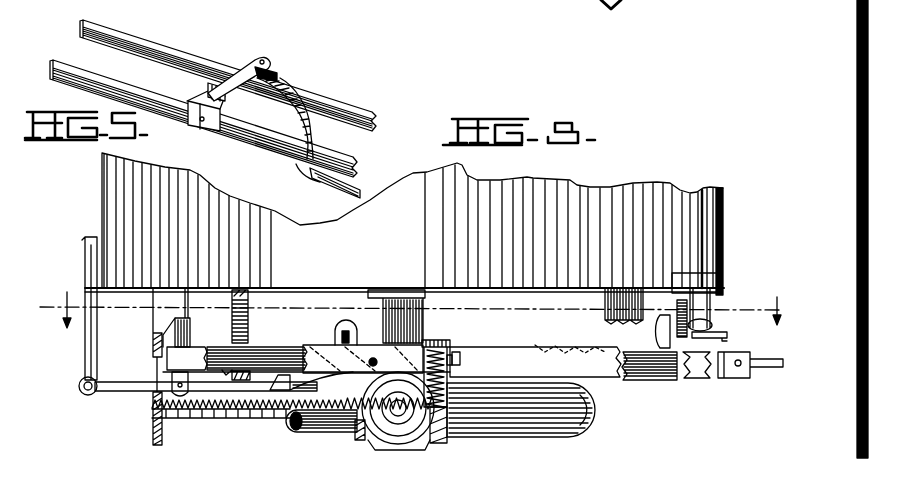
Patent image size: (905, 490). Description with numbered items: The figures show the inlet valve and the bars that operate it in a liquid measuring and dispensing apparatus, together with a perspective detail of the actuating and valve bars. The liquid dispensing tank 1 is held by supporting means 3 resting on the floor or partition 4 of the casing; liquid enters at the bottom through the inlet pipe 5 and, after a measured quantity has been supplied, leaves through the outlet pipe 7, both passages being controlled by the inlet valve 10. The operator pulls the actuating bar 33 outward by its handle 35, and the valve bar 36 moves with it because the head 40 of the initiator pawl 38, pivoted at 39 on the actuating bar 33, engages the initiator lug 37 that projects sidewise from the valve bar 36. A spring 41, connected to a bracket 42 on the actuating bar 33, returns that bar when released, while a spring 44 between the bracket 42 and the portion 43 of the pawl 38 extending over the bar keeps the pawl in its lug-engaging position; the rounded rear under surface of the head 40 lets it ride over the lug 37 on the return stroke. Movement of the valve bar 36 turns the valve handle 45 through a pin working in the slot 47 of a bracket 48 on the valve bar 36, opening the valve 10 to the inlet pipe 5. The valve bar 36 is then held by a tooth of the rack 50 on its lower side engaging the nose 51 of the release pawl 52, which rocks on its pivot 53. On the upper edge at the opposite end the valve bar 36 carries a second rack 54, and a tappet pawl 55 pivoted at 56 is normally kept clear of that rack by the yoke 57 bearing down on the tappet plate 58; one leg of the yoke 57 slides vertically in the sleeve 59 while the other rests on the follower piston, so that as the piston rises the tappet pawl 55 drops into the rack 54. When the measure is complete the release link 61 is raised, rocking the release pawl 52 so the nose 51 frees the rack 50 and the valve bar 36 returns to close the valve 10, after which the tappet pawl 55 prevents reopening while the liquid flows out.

In FIG. 3, the liquid dispensing tank 1 is at (608, 195).
In FIG. 3, the supporting means 3 is at (153, 320).
In FIG. 3, the floor or partition 4 is at (409, 309).
In FIG. 3, the inlet pipe 5 is at (318, 433).
In FIG. 3, the outlet pipe 7 is at (512, 437).
In FIG. 3, the inlet valve 10 is at (404, 446).
In FIG. 5, the actuating bar 33 is at (128, 38).
In FIG. 3, the actuating bar 33 is at (698, 380).
In FIG. 3, the handle 35 is at (768, 370).
In FIG. 5, the valve bar 36 is at (110, 78).
In FIG. 3, the valve bar 36 is at (672, 382).
In FIG. 5, the initiator lug 37 is at (188, 100).
In FIG. 3, the initiator lug 37 is at (455, 360).
In FIG. 5, the initiator pawl 38 is at (330, 118).
In FIG. 3, the initiator pawl 38 is at (348, 378).
In FIG. 5, the pivot 39 is at (312, 97).
In FIG. 3, the pivot 39 is at (378, 363).
In FIG. 5, the head 40 is at (215, 87).
In FIG. 3, the head 40 is at (468, 350).
In FIG. 3, the spring 41 is at (252, 419).
In FIG. 3, the bracket 42 is at (445, 438).
In FIG. 5, the portion of the pawl 43 is at (252, 60).
In FIG. 3, the portion of the pawl 43 is at (446, 345).
In FIG. 5, the spring 44 is at (276, 76).
In FIG. 3, the spring 44 is at (495, 352).
In FIG. 3, the valve handle 45 is at (360, 441).
In FIG. 3, the slot 47 is at (336, 338).
In FIG. 3, the bracket 48 is at (347, 320).
In FIG. 3, the rack 50 is at (243, 372).
In FIG. 3, the nose 51 is at (280, 392).
In FIG. 3, the release pawl 52 is at (140, 392).
In FIG. 3, the pivot 53 is at (182, 401).
In FIG. 3, the second rack 54 is at (555, 346).
In FIG. 3, the tappet pawl 55 is at (658, 327).
In FIG. 3, the pivot 56 is at (677, 300).
In FIG. 3, the yoke 57 is at (713, 325).
In FIG. 3, the tappet plate 58 is at (727, 336).
In FIG. 3, the sleeve 59 is at (723, 224).
In FIG. 3, the release link 61 is at (85, 343).